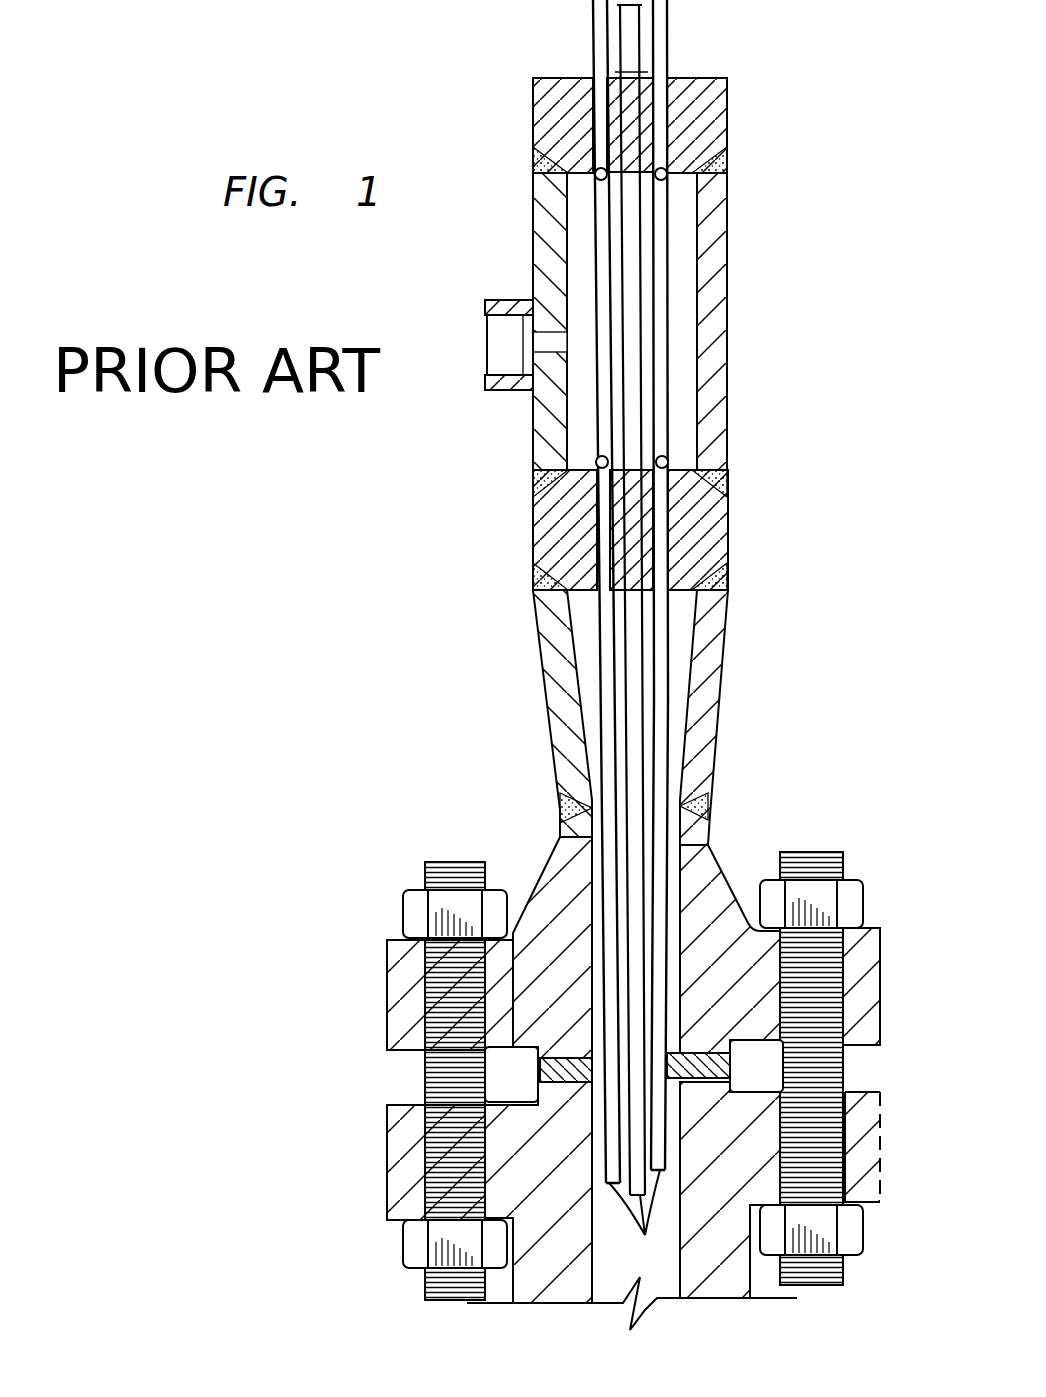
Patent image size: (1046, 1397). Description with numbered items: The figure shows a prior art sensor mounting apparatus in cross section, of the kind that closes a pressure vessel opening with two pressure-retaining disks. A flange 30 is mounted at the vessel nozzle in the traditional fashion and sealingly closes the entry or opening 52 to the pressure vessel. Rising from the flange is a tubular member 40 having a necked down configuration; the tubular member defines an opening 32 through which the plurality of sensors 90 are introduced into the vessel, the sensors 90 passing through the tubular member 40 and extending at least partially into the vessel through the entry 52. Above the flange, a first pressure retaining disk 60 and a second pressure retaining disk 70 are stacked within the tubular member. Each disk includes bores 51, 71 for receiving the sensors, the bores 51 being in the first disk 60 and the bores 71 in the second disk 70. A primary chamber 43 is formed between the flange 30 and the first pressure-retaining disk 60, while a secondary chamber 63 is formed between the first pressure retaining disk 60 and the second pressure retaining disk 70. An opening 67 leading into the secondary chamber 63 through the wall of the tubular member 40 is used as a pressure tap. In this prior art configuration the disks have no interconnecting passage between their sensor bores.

The flange 30 is at (387, 975).
The opening 32 is at (672, 975).
The tubular member 40 is at (727, 372).
The primary chamber 43 is at (672, 772).
The bore 51 is at (600, 460).
The entry or opening 52 is at (683, 1081).
The first pressure retaining disk 60 is at (740, 525).
The secondary chamber 63 is at (687, 317).
The opening 67 is at (547, 343).
The second pressure retaining disk 70 is at (740, 94).
The bore 71 is at (600, 180).
The sensors 90 is at (634, 1219).